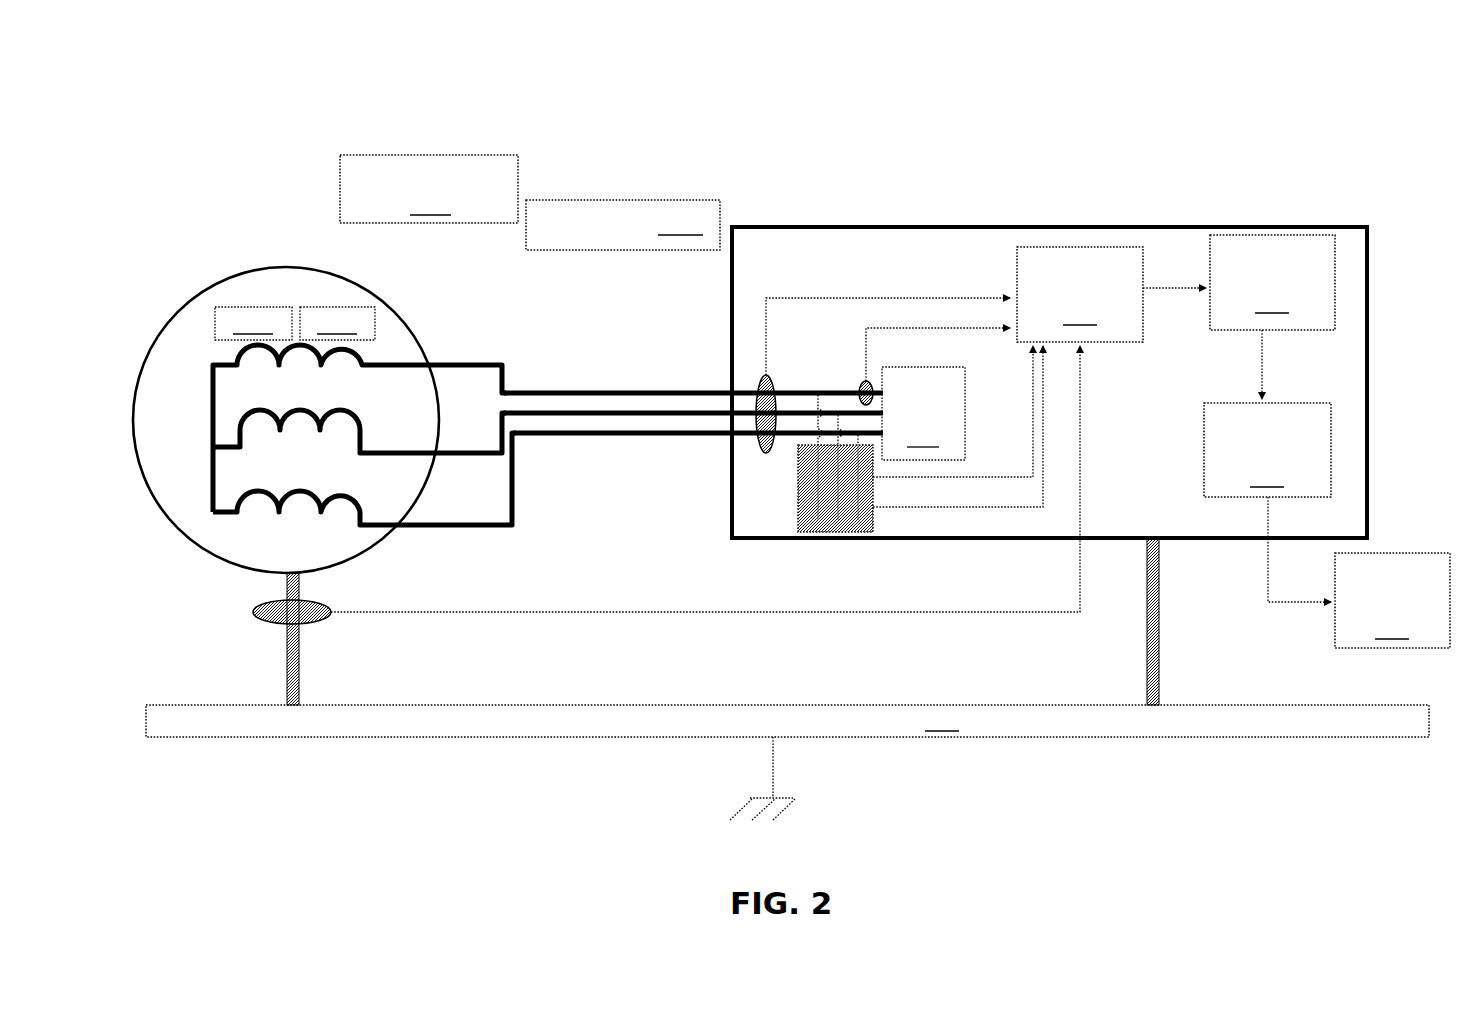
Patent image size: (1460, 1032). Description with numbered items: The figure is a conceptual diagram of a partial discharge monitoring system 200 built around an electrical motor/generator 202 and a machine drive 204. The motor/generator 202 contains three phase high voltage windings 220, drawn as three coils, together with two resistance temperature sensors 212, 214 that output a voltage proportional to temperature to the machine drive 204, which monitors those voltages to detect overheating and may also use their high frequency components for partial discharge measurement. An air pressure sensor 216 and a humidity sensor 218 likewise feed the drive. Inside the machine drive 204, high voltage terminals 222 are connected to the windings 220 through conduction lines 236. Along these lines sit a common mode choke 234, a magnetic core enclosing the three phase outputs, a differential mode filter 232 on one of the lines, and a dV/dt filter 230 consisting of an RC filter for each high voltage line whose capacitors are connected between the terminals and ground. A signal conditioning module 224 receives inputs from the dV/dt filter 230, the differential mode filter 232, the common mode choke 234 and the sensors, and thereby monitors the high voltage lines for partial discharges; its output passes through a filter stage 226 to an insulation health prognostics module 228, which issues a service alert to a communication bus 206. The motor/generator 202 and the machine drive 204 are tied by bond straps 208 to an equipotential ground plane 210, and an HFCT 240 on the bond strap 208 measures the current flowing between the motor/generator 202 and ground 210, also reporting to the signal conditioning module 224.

The partial discharge monitoring system 200 is at (1352, 78).
The electrical motor/generator 202 is at (208, 290).
The machine drive 204 is at (1368, 443).
The communication bus 206 is at (1392, 600).
The bond straps 208 is at (287, 640).
The equipotential ground plane 210 is at (787, 762).
The resistance temperature sensor 212 is at (1010, 256).
The resistance temperature sensor 214 is at (1010, 316).
The air pressure sensor 216 is at (1097, 242).
The humidity sensor 218 is at (1063, 242).
The windings 220 is at (182, 372).
The high voltage terminals 222 is at (923, 413).
The signal conditioning module 224 is at (1111, 294).
The filter stage 226 is at (1272, 317).
The insulation health prognostics module 228 is at (1267, 504).
The dV/dt filter 230 is at (798, 505).
The differential mode filter 232 is at (870, 400).
The common mode choke 234 is at (755, 432).
The conduction lines 236 is at (556, 472).
The HFCT 240 is at (265, 603).